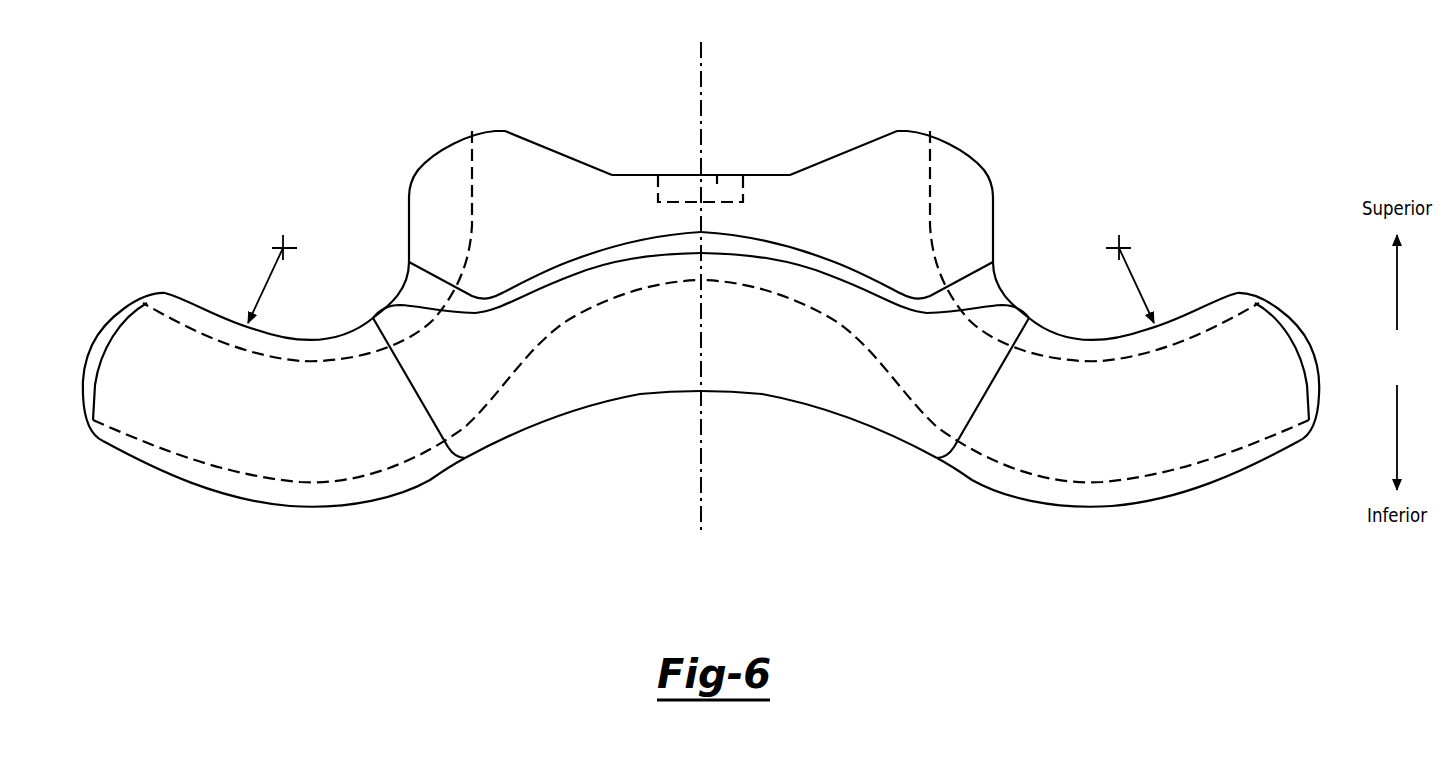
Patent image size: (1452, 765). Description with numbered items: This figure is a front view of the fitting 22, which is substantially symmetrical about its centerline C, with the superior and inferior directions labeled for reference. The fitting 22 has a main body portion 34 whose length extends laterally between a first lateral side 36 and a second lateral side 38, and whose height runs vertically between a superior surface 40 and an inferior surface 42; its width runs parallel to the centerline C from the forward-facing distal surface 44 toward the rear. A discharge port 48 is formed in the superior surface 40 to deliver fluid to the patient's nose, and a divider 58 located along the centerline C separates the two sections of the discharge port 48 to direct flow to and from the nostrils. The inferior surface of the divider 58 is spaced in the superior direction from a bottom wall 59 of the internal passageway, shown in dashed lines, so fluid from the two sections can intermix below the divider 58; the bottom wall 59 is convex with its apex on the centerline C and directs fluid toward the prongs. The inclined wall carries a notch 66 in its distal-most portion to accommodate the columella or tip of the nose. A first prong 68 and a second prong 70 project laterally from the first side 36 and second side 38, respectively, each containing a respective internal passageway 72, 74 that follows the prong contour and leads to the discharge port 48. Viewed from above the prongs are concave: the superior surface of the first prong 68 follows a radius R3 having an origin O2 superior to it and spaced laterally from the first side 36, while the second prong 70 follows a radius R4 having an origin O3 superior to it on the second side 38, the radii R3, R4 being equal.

The fitting 22 is at (520, 556).
The main body portion 34 is at (792, 370).
The first lateral side 36 is at (995, 198).
The second lateral side 38 is at (407, 198).
The superior surface 40 is at (480, 130).
The inferior surface 42 is at (517, 433).
The distal surface 44 is at (742, 348).
The discharge port 48 is at (657, 172).
The divider 58 is at (717, 183).
The bottom wall 59 is at (740, 280).
The notch 66 is at (782, 167).
The first prong 68 is at (1158, 500).
The second prong 70 is at (243, 500).
The internal passageway 72 is at (1247, 400).
The internal passageway 74 is at (155, 400).
The centerline C is at (703, 100).
The origin O3 is at (283, 248).
The radius R4 is at (265, 275).
The origin O2 is at (1119, 248).
The radius R3 is at (1137, 275).